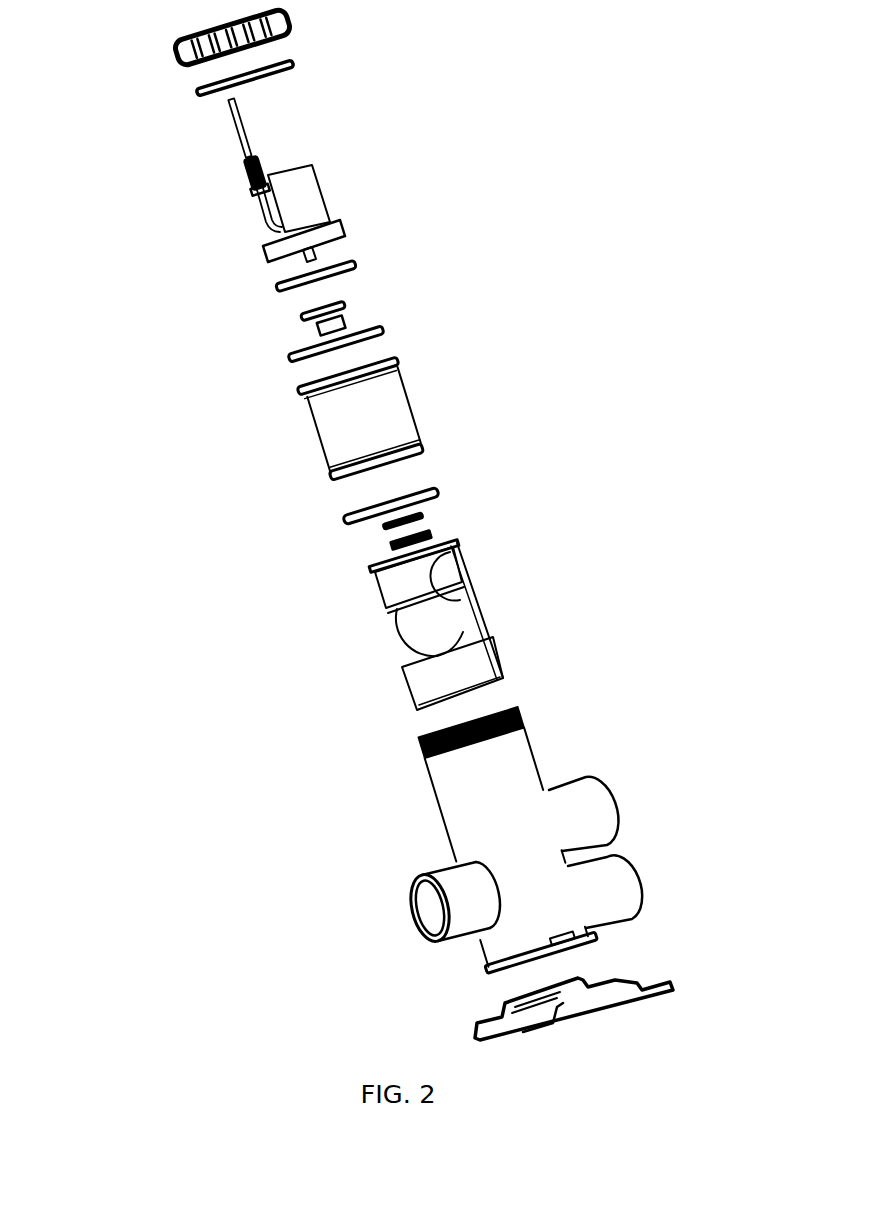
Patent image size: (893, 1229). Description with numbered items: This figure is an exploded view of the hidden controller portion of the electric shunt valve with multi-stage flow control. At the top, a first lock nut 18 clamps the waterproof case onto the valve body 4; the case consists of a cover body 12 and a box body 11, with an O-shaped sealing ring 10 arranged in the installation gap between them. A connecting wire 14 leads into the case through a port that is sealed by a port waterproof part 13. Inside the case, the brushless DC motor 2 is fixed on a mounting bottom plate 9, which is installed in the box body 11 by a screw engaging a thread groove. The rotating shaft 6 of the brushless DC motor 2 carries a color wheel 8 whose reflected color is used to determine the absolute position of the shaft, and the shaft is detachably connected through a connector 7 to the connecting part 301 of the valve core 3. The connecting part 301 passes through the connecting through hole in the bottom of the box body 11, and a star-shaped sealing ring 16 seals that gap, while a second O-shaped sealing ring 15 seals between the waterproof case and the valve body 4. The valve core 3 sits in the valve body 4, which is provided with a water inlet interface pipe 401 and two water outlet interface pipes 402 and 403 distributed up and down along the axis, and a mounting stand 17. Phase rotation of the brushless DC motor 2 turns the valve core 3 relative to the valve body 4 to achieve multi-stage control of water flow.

The first lock nut 18 is at (173, 58).
The cover body 12 is at (287, 55).
The connecting wire 14 is at (233, 127).
The port waterproof part 13 is at (243, 172).
The brushless DC motor 2 is at (303, 195).
The rotating shaft 6 is at (348, 240).
The mounting bottom plate 9 is at (268, 254).
The color wheel 8 is at (280, 288).
The connector 7 is at (347, 311).
The O-shaped sealing ring 10 is at (300, 350).
The box body 11 is at (415, 428).
The second O-shaped sealing ring 15 is at (345, 517).
The star-shaped sealing ring 16 is at (423, 513).
The connecting part 301 is at (393, 552).
The valve core 3 is at (477, 627).
The valve body 4 is at (442, 815).
The water inlet interface pipe 401 is at (475, 897).
The water outlet interface pipe 402 is at (582, 807).
The water outlet interface pipe 403 is at (605, 885).
The mounting stand 17 is at (675, 985).